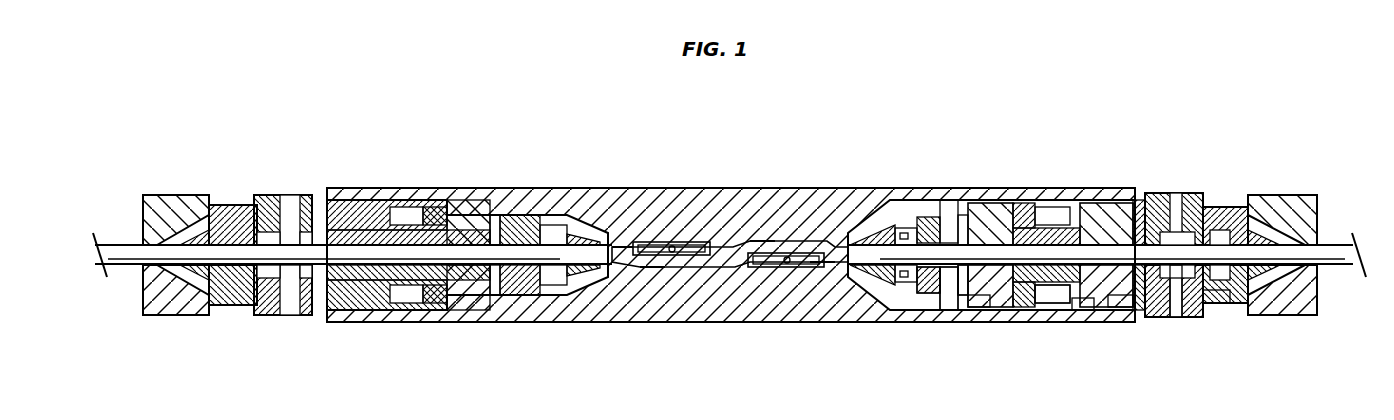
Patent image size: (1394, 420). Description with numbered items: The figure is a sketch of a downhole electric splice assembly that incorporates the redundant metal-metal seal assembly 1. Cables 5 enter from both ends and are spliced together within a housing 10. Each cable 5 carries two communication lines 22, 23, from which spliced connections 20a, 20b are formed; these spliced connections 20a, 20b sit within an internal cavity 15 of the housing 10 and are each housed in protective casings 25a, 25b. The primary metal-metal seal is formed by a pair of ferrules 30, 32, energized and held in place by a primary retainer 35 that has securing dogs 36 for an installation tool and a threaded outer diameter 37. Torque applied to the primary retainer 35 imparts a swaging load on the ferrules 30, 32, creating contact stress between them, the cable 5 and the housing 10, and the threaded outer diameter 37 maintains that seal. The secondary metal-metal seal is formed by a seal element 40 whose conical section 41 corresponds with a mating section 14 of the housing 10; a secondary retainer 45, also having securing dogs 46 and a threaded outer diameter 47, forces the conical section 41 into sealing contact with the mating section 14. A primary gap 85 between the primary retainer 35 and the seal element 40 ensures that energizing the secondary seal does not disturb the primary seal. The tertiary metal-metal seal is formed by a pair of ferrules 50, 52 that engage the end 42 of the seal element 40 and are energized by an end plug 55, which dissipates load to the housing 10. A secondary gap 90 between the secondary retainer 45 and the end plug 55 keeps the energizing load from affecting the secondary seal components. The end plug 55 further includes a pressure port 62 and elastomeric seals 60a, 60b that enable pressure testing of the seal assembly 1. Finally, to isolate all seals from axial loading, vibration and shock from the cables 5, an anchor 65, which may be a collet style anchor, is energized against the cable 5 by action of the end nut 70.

The redundant metal-metal seal assembly 1 is at (1128, 166).
The cable 5 is at (120, 245).
The housing 10 is at (541, 188).
The mating section 14 is at (978, 305).
The internal cavity 15 is at (722, 268).
The spliced connection 20a is at (672, 249).
The spliced connection 20b is at (790, 267).
The communication line 22 is at (622, 246).
The communication line 23 is at (650, 266).
The protective casing 25a is at (688, 242).
The protective casing 25b is at (800, 252).
The ferrule 30 is at (862, 232).
The ferrule 32 is at (905, 228).
The primary retainer 35 is at (933, 292).
The securing dogs 36 is at (945, 292).
The threaded outer diameter 37 is at (930, 217).
The seal element 40 is at (995, 203).
The conical section 41 is at (985, 188).
The end of seal element 42 is at (1110, 203).
The secondary retainer 45 is at (1025, 203).
The securing dogs 46 is at (1050, 228).
The threaded outer diameter 47 is at (1053, 303).
The ferrule 50 is at (1157, 193).
The ferrule 52 is at (1191, 195).
The end plug 55 is at (1228, 207).
The elastomeric seal 60a is at (1118, 303).
The elastomeric seal 60b is at (1210, 303).
The pressure port 62 is at (1176, 317).
The anchor 65 is at (1268, 315).
The end nut 70 is at (1290, 195).
The primary gap 85 is at (966, 295).
The secondary gap 90 is at (1080, 307).